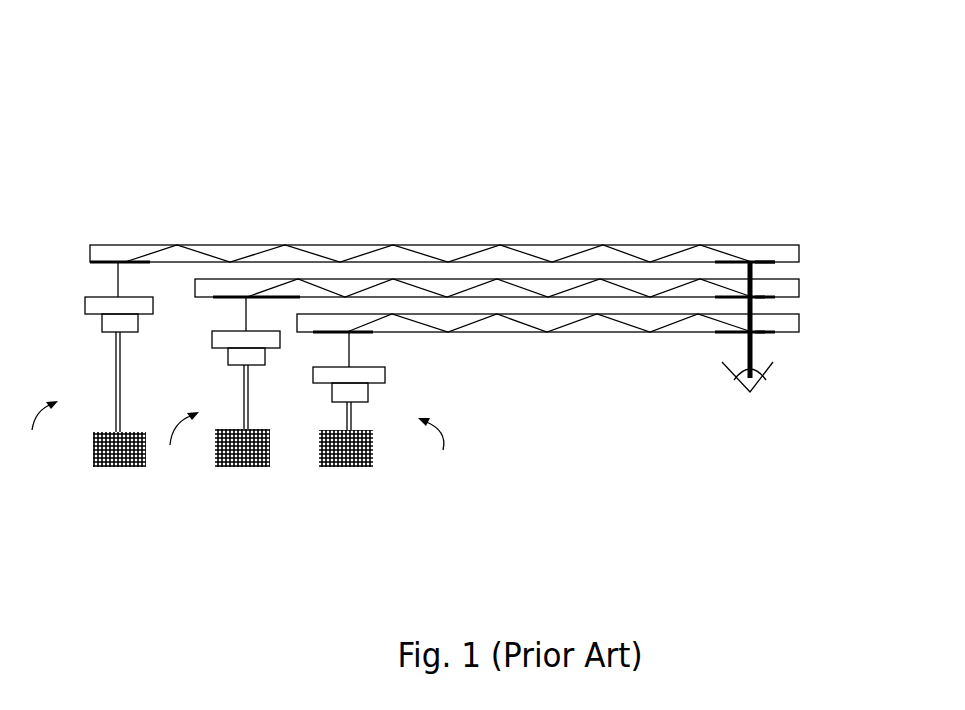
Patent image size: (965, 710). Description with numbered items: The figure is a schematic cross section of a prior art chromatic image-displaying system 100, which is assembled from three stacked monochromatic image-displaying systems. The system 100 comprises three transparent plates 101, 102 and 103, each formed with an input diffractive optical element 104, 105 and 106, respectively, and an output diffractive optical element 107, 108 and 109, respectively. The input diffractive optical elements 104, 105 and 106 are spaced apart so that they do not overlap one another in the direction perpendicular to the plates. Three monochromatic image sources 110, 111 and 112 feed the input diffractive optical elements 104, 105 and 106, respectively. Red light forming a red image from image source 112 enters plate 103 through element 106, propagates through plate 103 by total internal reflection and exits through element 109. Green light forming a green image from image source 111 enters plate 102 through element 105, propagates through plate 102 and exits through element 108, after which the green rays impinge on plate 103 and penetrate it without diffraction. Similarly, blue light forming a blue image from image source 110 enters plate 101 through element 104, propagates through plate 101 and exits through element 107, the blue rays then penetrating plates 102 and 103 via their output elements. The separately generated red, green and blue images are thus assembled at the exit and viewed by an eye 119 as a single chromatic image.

The chromatic image-displaying system 100 is at (462, 36).
The transparent plate 101 is at (652, 245).
The transparent plate 102 is at (800, 291).
The transparent plate 103 is at (623, 332).
The input diffractive optical element 104 is at (110, 262).
The input diffractive optical element 105 is at (213, 298).
The input diffractive optical element 106 is at (363, 332).
The output diffractive optical element 107 is at (767, 262).
The output diffractive optical element 108 is at (770, 297).
The output diffractive optical element 109 is at (767, 332).
The monochromatic image source 110 is at (40, 428).
The monochromatic image source 111 is at (179, 439).
The monochromatic image source 112 is at (424, 446).
The eye 119 is at (752, 392).